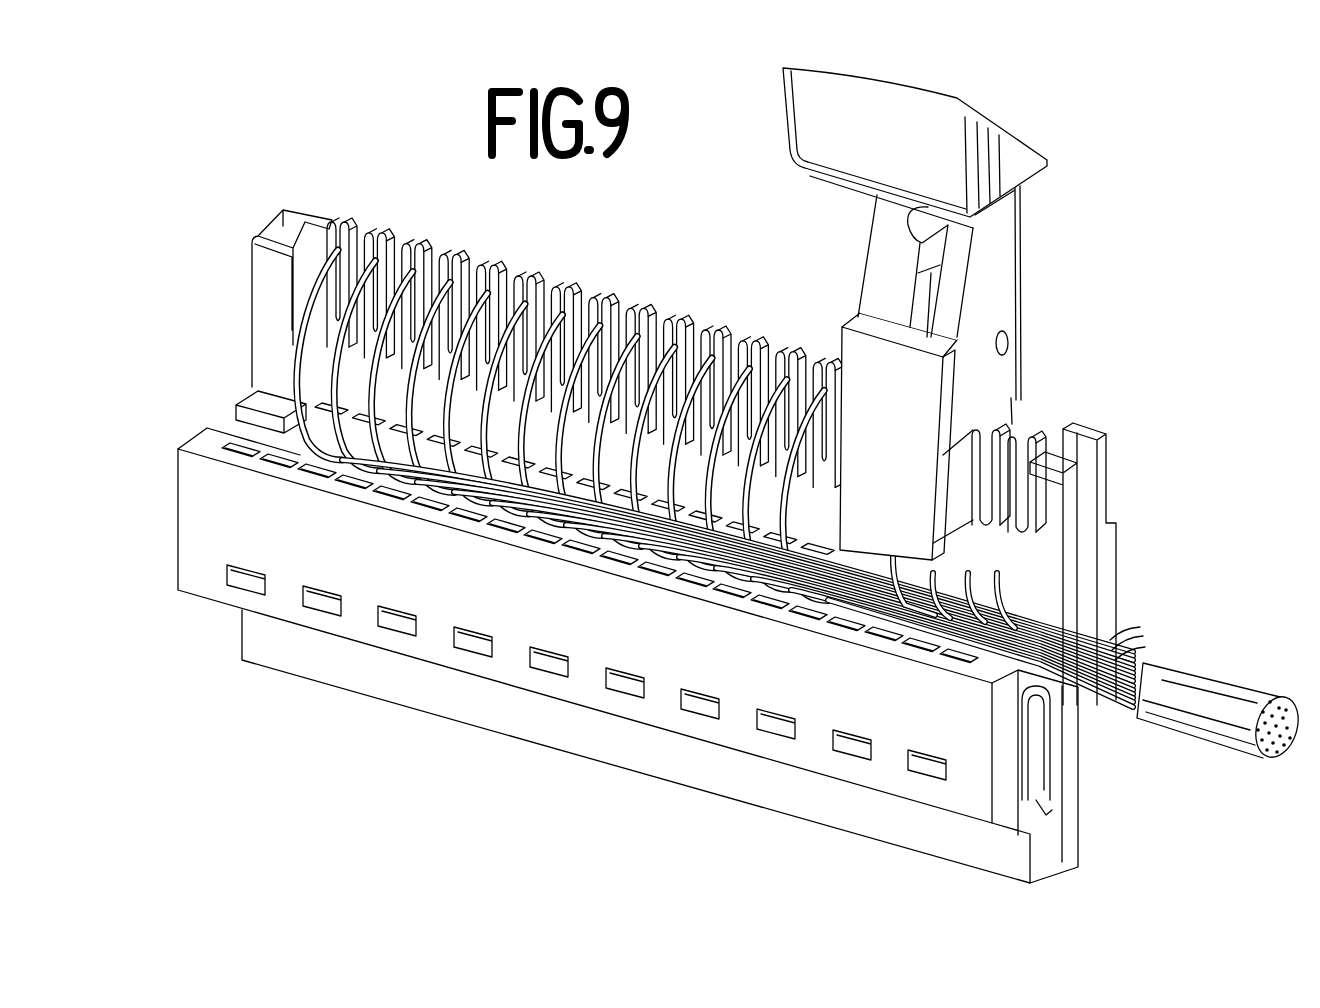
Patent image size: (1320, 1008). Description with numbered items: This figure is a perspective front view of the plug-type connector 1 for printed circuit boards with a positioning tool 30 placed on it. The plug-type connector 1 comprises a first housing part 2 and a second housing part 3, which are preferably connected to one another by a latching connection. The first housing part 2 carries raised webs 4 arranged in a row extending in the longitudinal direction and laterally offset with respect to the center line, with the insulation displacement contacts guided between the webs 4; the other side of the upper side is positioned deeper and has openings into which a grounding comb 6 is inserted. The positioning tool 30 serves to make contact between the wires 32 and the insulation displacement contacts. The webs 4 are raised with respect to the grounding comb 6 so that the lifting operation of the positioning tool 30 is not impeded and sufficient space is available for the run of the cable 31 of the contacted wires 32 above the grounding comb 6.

The plug-type connector 1 is at (690, 546).
The first housing part 2 is at (1103, 587).
The second housing part 3 is at (1052, 840).
The raised webs 4 is at (480, 261).
The grounding comb 6 is at (260, 435).
The positioning tool 30 is at (1058, 212).
The cable 31 is at (1225, 697).
The wires 32 is at (1130, 660).